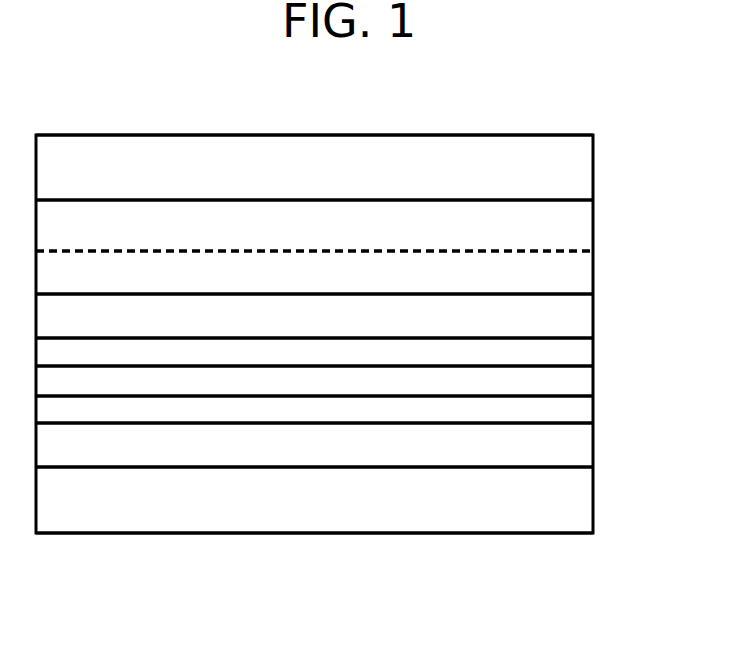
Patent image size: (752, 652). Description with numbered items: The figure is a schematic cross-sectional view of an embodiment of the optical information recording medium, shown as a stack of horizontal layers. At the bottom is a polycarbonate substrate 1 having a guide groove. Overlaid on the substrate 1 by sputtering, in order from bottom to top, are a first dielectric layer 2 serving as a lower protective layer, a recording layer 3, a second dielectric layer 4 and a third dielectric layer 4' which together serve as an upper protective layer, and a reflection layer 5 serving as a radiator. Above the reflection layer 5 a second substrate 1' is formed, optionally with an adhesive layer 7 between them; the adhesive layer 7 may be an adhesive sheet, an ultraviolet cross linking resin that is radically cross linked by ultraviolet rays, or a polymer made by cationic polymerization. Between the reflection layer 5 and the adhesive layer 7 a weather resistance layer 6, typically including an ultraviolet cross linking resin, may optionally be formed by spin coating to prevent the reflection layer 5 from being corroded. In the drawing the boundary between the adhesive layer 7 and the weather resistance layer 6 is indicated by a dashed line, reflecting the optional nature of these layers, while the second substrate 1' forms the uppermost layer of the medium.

The polycarbonate substrate 1 is at (342, 500).
The first dielectric layer 2 is at (580, 446).
The recording layer 3 is at (580, 410).
The second dielectric layer 4 is at (342, 381).
The third dielectric layer 4' is at (346, 352).
The reflection layer 5 is at (580, 318).
The weather resistance layer 6 is at (580, 272).
The adhesive layer 7 is at (580, 222).
The second substrate 1' is at (346, 167).